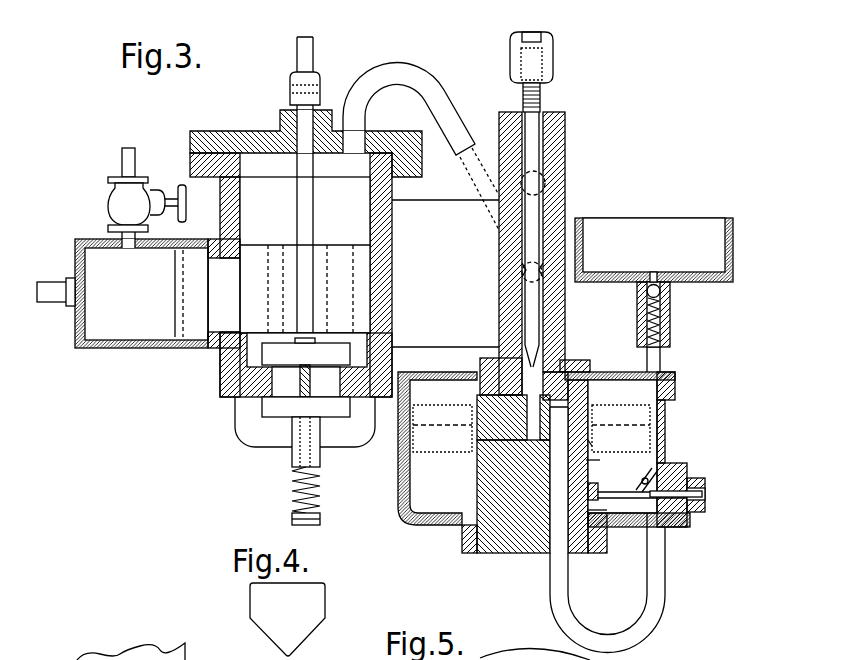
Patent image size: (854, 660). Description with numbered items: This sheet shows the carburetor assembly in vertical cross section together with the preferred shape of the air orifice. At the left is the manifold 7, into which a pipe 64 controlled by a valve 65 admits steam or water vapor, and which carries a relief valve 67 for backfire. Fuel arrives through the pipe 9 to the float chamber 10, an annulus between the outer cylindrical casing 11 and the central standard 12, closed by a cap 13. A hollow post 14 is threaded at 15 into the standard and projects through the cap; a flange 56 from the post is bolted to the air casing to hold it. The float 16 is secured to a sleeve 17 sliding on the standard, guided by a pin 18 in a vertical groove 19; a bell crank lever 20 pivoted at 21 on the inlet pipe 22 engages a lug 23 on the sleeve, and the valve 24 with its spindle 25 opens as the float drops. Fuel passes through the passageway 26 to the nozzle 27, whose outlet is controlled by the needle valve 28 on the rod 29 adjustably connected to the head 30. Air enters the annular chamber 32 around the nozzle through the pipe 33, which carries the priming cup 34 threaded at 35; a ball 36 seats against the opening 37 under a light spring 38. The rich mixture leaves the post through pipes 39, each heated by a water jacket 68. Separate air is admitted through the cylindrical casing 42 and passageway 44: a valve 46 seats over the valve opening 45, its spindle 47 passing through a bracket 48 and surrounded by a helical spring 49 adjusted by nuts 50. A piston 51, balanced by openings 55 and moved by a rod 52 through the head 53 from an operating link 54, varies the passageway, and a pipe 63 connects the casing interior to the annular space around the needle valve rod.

In FIG. 3, the manifold 7 is at (137, 350).
In FIG. 3, the pipe 9 is at (707, 493).
In FIG. 3, the float chamber 10 is at (433, 500).
In FIG. 3, the cylindrical casing 11 is at (665, 418).
In FIG. 3, the standard 12 is at (525, 547).
In FIG. 3, the cap 13 is at (610, 372).
In FIG. 3, the hollow post 14 is at (556, 205).
In FIG. 3, the threaded connection 15 is at (562, 367).
In FIG. 3, the float 16 is at (625, 413).
In FIG. 3, the sleeve 17 is at (592, 480).
In FIG. 3, the pin 18 is at (593, 463).
In FIG. 3, the vertical groove 19 is at (592, 445).
In FIG. 3, the bell crank lever 20 is at (615, 497).
In FIG. 3, the pivot 21 is at (660, 460).
In FIG. 3, the inlet pipe 22 is at (673, 478).
In FIG. 3, the lug 23 is at (598, 502).
In FIG. 3, the valve 24 is at (693, 510).
In FIG. 3, the spindle 25 is at (647, 523).
In FIG. 3, the passageway 26 is at (498, 447).
In FIG. 3, the nozzle 27 is at (522, 367).
In FIG. 3, the needle valve 28 is at (553, 352).
In FIG. 3, the rod 29 is at (533, 152).
In FIG. 3, the head 30 is at (547, 50).
In FIG. 3, the annular chamber 32 is at (490, 400).
In FIG. 3, the pipe 33 is at (602, 637).
In FIG. 3, the priming cup 34 is at (735, 257).
In FIG. 3, the threaded connection 35 is at (660, 352).
In FIG. 3, the ball 36 is at (657, 295).
In FIG. 3, the opening 37 is at (657, 277).
In FIG. 3, the spring 38 is at (658, 315).
In FIG. 3, the pipes 39 is at (547, 183).
In FIG. 3, the cylindrical casing 42 is at (222, 206).
In FIG. 3, the passageway 44 is at (208, 315).
In FIG. 4, the passageway 44 is at (250, 586).
In FIG. 3, the valve opening 45 is at (337, 387).
In FIG. 3, the valve 46 is at (262, 355).
In FIG. 3, the spindle 47 is at (302, 407).
In FIG. 3, the bracket 48 is at (353, 433).
In FIG. 3, the helical spring 49 is at (323, 492).
In FIG. 3, the nuts 50 is at (323, 520).
In FIG. 3, the piston 51 is at (253, 248).
In FIG. 3, the rod 52 is at (308, 203).
In FIG. 3, the head 53 is at (248, 131).
In FIG. 3, the operating link 54 is at (309, 64).
In FIG. 3, the openings 55 is at (347, 243).
In FIG. 3, the flange 56 is at (438, 213).
In FIG. 3, the pipe 63 is at (442, 103).
In FIG. 3, the pipe 64 is at (122, 155).
In FIG. 3, the valve 65 is at (113, 195).
In FIG. 3, the relief valve 67 is at (57, 298).
In FIG. 3, the water jacket 68 is at (543, 170).